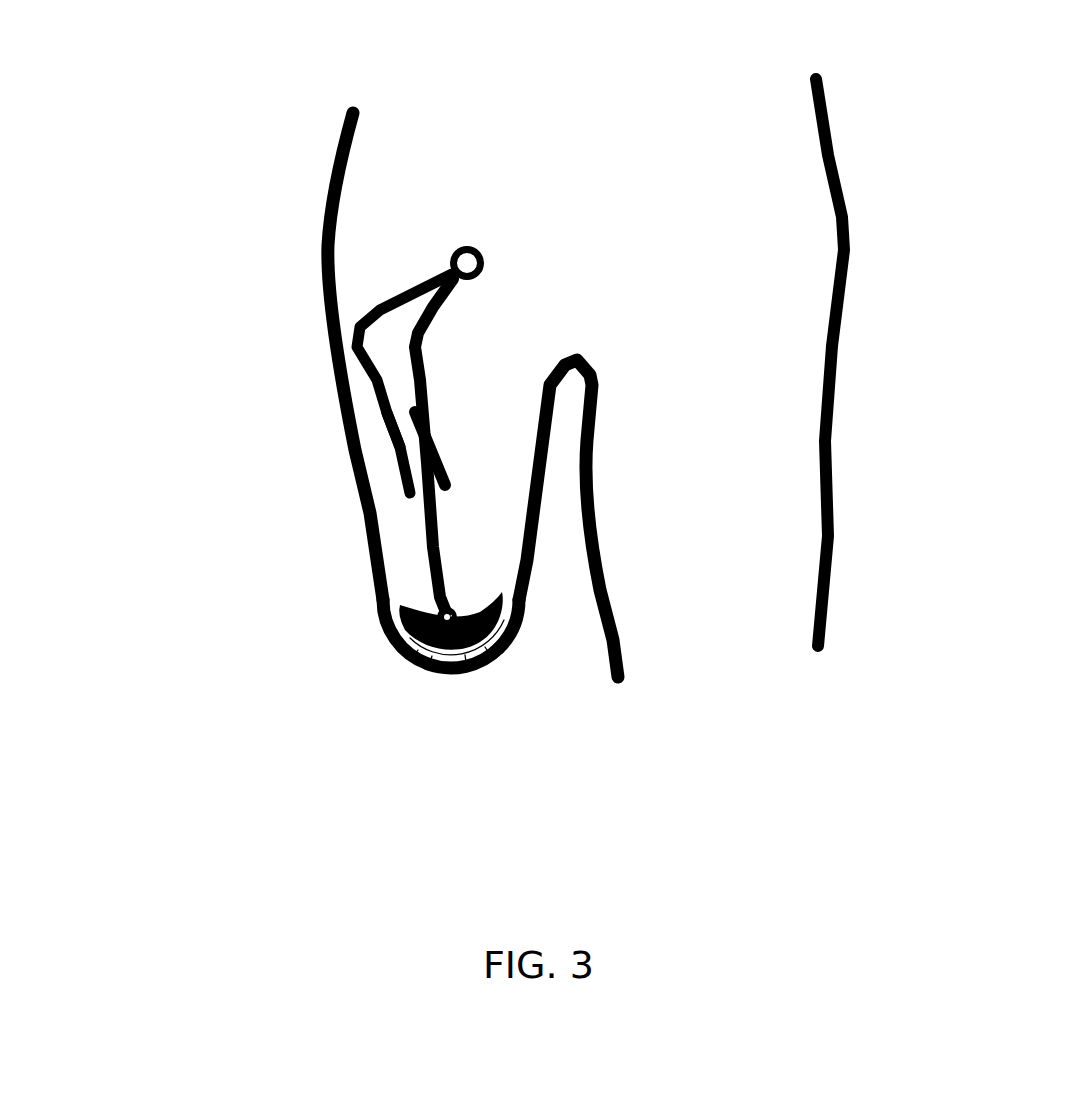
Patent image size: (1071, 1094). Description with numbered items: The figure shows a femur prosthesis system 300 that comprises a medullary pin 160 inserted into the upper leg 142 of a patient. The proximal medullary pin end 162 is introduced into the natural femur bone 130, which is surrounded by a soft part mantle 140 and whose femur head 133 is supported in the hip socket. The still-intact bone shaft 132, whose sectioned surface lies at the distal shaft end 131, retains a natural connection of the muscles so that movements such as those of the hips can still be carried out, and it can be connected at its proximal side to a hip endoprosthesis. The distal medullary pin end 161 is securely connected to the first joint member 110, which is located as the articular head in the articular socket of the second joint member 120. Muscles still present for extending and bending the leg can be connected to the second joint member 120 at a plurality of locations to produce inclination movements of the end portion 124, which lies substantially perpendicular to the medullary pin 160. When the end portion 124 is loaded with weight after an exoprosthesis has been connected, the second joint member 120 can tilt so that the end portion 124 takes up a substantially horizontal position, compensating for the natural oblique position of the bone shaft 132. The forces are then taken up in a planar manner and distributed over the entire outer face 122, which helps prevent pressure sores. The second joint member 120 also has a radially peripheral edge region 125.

The femur prosthesis system 300 is at (268, 158).
The first joint member 110 is at (427, 620).
The second joint member 120 is at (492, 706).
The outer face 122 is at (415, 665).
The end portion 124 is at (473, 667).
The radially peripheral edge region 125 is at (513, 628).
The femur bone 130 is at (438, 433).
The distal shaft end 131 is at (410, 493).
The bone shaft 132 is at (400, 435).
The femur head 133 is at (483, 249).
The soft part mantle 140 is at (466, 462).
The upper leg 142 is at (785, 596).
The medullary pin 160 is at (450, 557).
The distal medullary pin end 161 is at (437, 608).
The proximal medullary pin end 162 is at (433, 407).